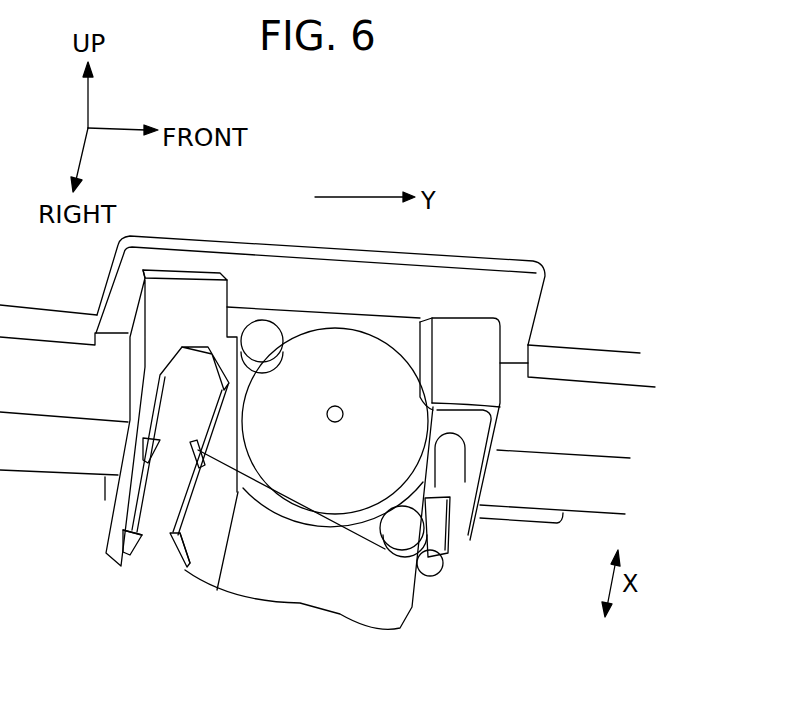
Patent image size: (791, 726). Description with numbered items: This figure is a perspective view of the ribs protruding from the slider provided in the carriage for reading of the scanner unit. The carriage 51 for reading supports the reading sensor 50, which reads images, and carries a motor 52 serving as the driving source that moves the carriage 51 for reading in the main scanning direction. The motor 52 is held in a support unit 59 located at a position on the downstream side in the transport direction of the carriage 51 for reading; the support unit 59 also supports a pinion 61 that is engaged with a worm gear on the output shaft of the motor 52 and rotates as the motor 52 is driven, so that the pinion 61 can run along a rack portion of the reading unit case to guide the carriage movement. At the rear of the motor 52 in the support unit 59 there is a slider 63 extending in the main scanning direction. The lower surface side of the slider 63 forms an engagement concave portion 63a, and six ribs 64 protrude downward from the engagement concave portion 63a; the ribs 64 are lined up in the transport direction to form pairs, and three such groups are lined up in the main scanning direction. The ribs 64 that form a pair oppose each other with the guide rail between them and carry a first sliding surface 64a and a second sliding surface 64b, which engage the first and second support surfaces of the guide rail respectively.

The reading sensor 50 is at (577, 357).
The carriage for reading 51 is at (607, 400).
The motor 52 is at (350, 348).
The support unit 59 is at (290, 597).
The pinion 61 is at (450, 555).
The slider 63 is at (157, 350).
The engagement concave portion 63a is at (192, 352).
The ribs 64 is at (213, 383).
The first sliding surface 64a is at (187, 566).
The second sliding surface 64b is at (147, 530).